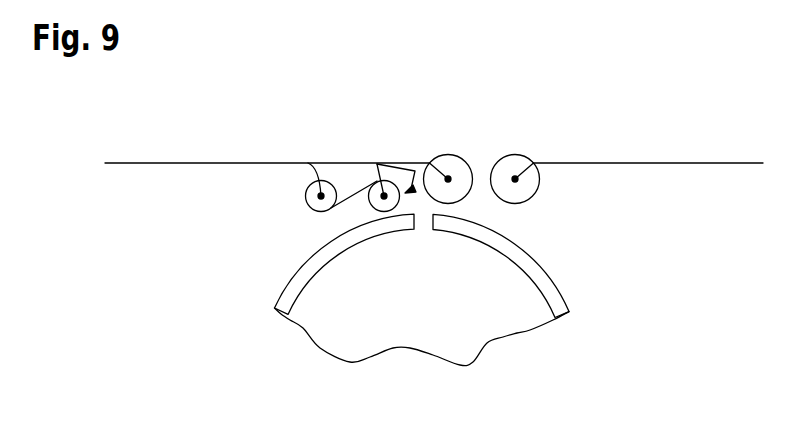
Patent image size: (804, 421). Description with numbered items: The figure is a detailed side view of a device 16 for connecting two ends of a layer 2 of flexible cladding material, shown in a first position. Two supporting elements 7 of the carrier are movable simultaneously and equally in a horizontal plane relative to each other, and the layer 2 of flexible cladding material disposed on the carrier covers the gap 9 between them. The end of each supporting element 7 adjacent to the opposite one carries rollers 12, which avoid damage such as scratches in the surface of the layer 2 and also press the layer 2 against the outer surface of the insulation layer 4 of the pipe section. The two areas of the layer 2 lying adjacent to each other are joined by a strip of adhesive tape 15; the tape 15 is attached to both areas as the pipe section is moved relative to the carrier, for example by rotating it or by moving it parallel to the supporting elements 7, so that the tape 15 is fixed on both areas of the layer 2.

The layer of flexible cladding material 2 is at (293, 292).
The insulation layer 4 is at (492, 313).
The supporting elements 7 is at (215, 164).
The gap 9 is at (505, 126).
The rollers 12 is at (457, 156).
The adhesive tape 15 is at (360, 198).
The device 16 is at (354, 309).